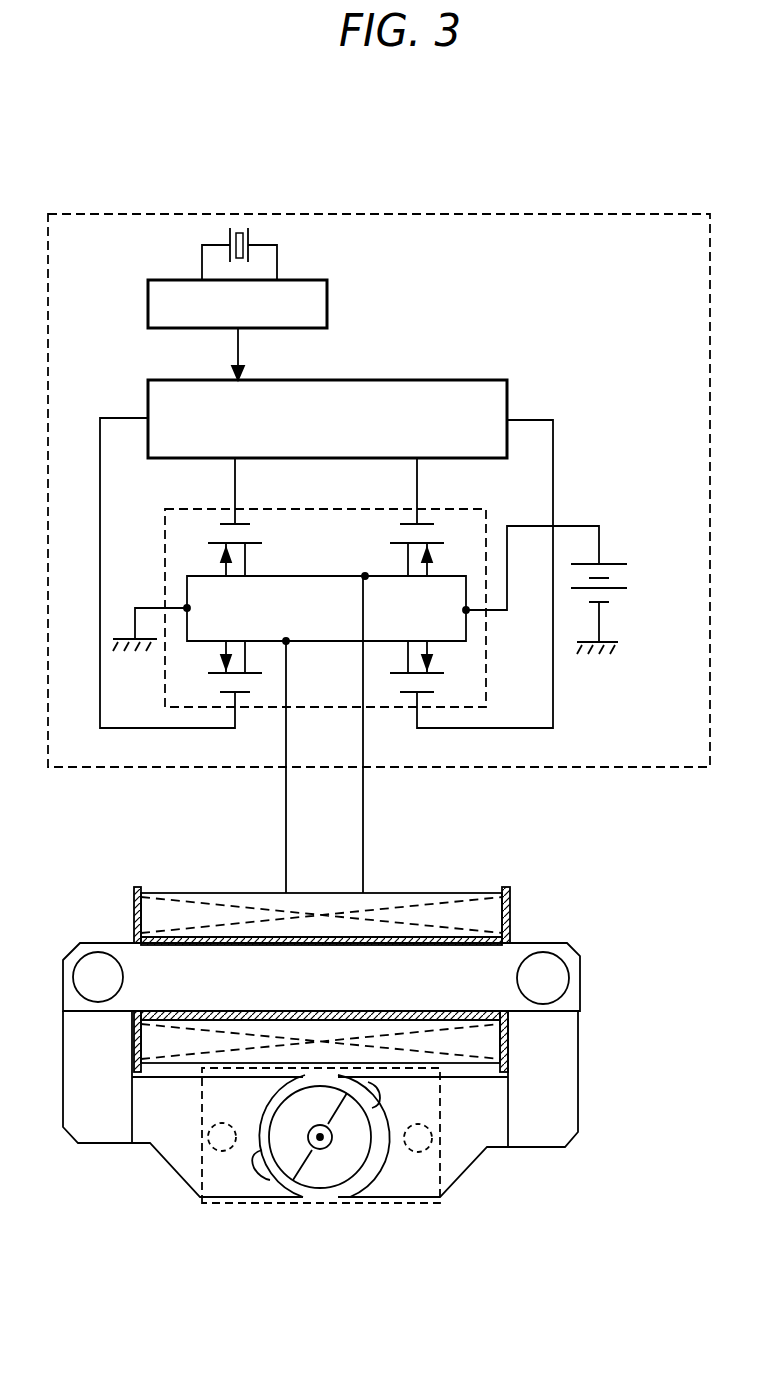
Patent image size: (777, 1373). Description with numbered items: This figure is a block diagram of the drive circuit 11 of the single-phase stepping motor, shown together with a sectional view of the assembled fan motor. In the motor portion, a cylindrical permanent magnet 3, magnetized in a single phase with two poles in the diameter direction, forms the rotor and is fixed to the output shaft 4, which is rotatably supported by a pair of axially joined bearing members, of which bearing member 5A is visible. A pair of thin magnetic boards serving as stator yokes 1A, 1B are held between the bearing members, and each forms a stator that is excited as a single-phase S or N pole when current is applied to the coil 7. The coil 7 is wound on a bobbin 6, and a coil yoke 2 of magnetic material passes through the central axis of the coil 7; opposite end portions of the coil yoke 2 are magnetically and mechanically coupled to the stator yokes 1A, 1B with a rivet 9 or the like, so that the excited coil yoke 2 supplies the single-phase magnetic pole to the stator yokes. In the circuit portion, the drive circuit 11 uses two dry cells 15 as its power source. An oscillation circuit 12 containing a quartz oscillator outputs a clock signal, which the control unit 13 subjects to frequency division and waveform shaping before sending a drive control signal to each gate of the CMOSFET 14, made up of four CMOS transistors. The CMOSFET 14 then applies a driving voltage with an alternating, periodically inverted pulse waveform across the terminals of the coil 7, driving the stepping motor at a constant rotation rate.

The drive circuit 11 is at (446, 213).
The oscillation circuit 12 is at (327, 300).
The control unit 13 is at (507, 397).
The CMOSFET 14 is at (486, 509).
The dry cells 15 is at (612, 577).
The coil 7 is at (415, 893).
The bobbin 6 is at (510, 887).
The coil yoke 2 is at (512, 962).
The rivet 9 is at (556, 980).
The stator yoke 1A is at (143, 1130).
The stator yoke 1B is at (578, 1092).
The permanent magnet 3 is at (344, 1177).
The output shaft 4 is at (321, 1149).
The bearing member 5A is at (419, 1180).